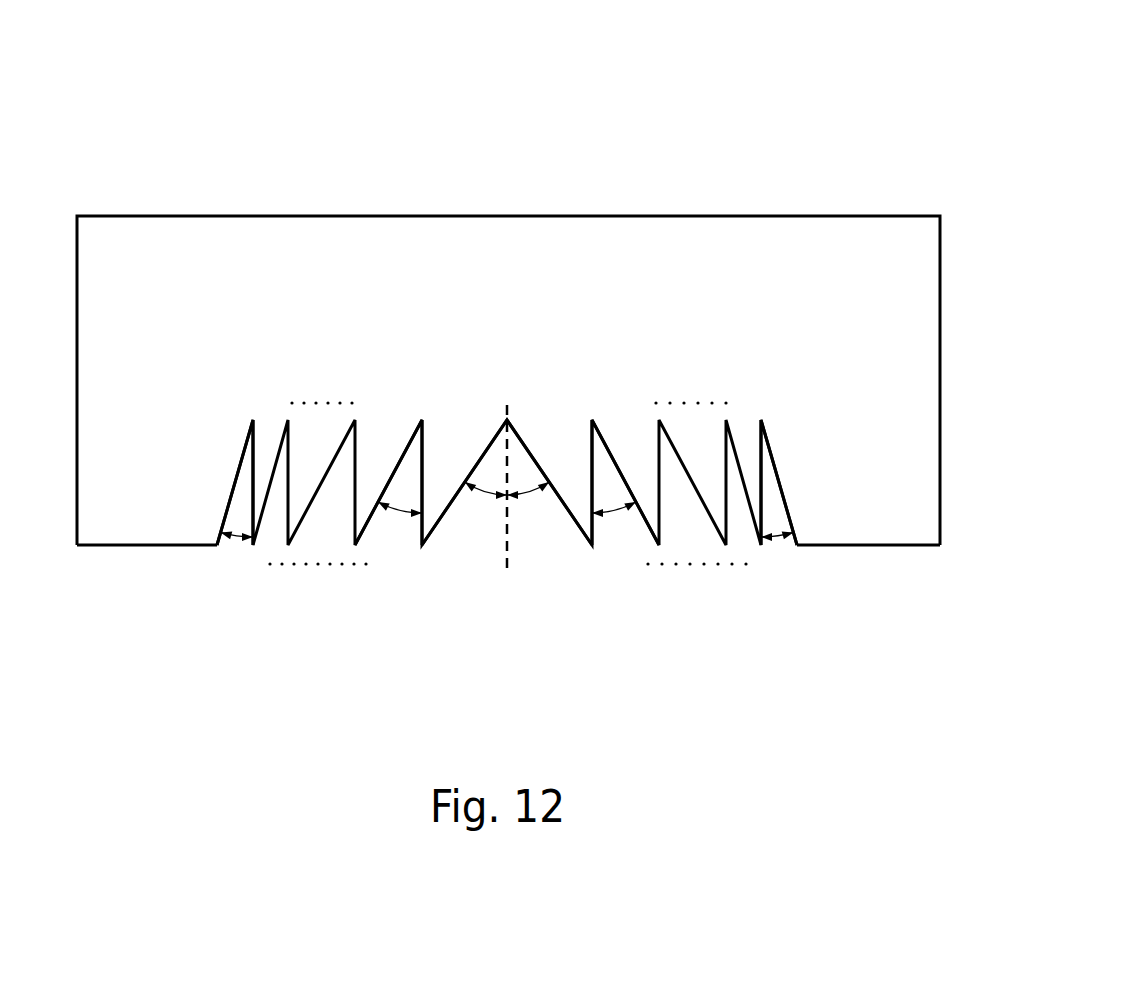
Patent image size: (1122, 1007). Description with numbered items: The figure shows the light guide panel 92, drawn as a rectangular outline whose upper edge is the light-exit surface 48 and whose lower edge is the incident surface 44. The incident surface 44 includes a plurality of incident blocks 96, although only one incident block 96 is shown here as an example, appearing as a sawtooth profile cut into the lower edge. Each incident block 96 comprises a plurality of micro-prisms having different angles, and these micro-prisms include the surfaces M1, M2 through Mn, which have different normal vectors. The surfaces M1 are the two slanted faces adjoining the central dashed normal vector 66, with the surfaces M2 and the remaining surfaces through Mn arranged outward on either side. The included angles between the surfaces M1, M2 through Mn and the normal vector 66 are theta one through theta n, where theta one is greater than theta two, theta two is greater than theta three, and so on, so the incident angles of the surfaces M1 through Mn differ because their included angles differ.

The light guide panel 92 is at (970, 142).
The light-exit surface 48 is at (805, 216).
The incident surface 44 is at (865, 545).
The incident block 96 is at (783, 483).
The normal vector 66 is at (507, 573).
The surface M1 is at (488, 450).
The surface M2 is at (406, 447).
The surface Mn is at (507, 465).